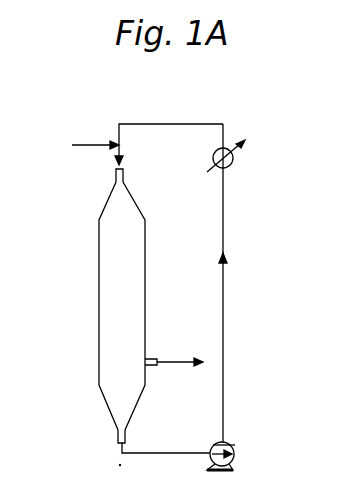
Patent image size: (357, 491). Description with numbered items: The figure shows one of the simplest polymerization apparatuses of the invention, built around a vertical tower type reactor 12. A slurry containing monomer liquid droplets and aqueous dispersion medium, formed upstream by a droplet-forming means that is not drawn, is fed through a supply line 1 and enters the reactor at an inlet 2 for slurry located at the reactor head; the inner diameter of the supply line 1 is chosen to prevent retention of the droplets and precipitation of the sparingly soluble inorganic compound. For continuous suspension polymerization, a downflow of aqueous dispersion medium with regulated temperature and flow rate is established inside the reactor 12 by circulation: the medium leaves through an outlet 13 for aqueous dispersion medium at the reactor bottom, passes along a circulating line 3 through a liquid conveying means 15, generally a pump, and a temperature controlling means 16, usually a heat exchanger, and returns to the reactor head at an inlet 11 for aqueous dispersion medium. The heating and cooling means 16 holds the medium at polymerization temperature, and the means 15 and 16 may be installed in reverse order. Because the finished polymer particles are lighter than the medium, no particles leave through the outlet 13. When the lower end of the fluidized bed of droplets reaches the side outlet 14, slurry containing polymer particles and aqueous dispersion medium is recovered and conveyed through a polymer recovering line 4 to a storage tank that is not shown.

The supply line 1 is at (93, 145).
The inlet for slurry 2 is at (118, 143).
The circulating line 3 is at (224, 291).
The polymer recovering line 4 is at (172, 362).
The inlet for aqueous dispersion medium 11 is at (123, 178).
The tower type reactor 12 is at (99, 307).
The outlet for aqueous dispersion medium 13 is at (118, 440).
The outlet 14 is at (148, 358).
The liquid conveying means 15 is at (234, 454).
The temperature controlling means 16 is at (233, 158).